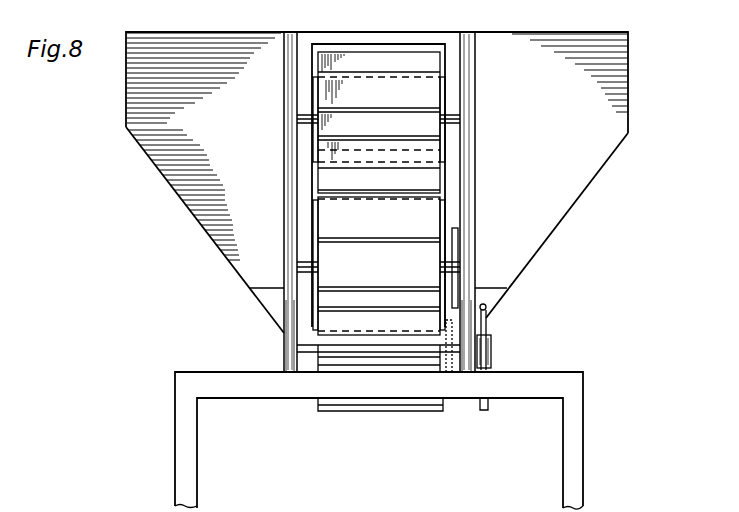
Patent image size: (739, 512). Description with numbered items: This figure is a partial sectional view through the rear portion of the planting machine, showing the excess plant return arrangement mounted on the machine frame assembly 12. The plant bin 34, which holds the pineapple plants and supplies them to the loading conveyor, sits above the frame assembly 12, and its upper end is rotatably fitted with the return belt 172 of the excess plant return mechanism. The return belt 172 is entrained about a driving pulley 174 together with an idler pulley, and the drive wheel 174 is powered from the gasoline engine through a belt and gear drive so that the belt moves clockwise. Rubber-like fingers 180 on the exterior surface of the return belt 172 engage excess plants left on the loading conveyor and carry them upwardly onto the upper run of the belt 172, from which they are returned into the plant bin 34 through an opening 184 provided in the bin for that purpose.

The frame assembly 12 is at (601, 405).
The plant bin 34 is at (615, 116).
The return belt 172 is at (442, 182).
The driving pulley 174 is at (460, 232).
The rubber-like fingers 180 is at (420, 192).
The opening 184 is at (447, 58).